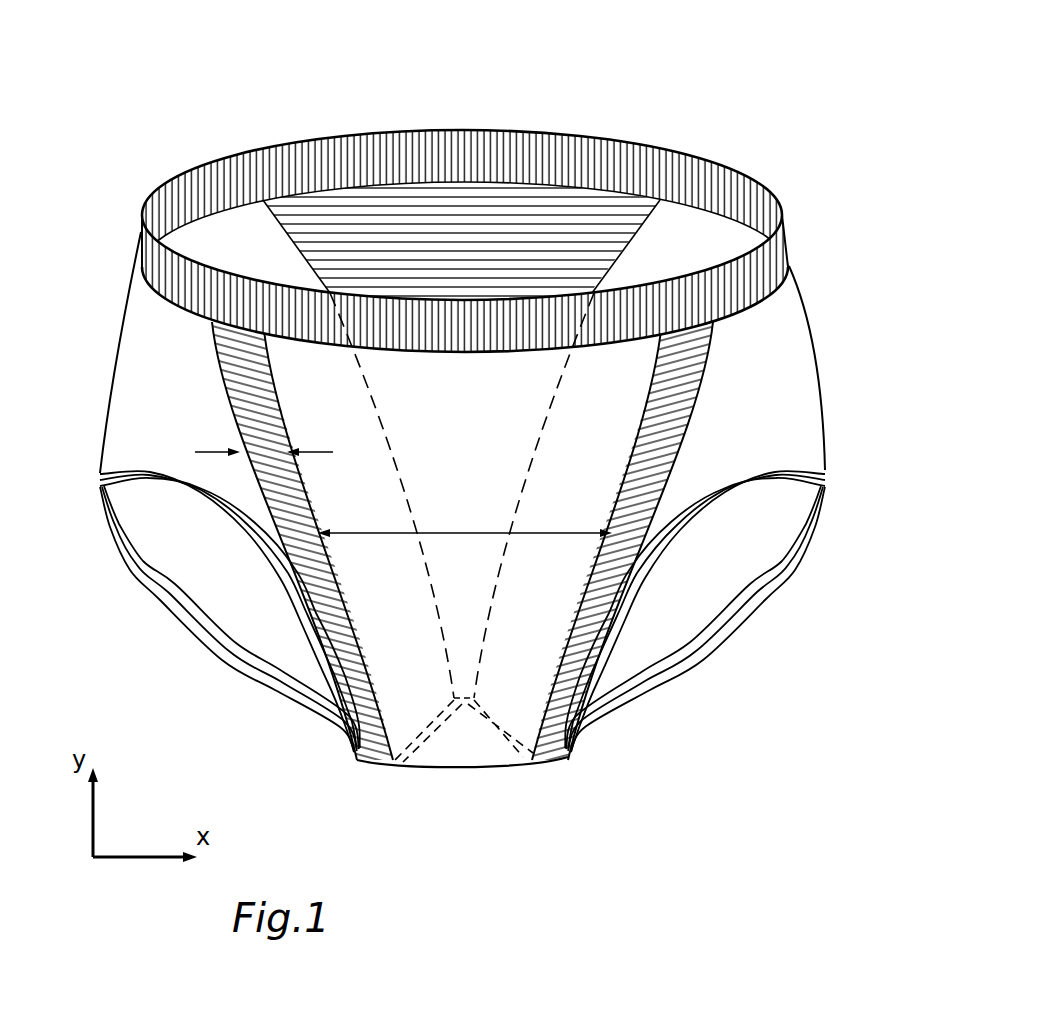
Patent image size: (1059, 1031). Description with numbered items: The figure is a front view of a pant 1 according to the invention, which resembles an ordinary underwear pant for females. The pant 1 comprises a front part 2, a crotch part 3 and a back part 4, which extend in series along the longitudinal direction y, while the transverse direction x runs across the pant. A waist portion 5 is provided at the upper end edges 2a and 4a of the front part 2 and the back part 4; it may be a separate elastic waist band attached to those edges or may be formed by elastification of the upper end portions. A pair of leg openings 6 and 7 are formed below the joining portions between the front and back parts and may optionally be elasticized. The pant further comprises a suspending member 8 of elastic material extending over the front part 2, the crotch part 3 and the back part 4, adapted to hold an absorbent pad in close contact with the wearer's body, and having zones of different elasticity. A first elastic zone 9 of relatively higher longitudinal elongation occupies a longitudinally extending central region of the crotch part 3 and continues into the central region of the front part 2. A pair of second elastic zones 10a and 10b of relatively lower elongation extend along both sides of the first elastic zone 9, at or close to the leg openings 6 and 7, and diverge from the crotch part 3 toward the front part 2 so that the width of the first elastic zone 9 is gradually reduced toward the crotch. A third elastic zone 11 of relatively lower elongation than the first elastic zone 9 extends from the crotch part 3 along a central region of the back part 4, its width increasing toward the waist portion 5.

The pant 1 is at (679, 64).
The front part 2 is at (145, 380).
The upper end edge of the front part 2a is at (150, 296).
The crotch part 3 is at (512, 772).
The back part 4 is at (465, 231).
The upper end edge of the back part 4a is at (256, 206).
The waist portion 5 is at (693, 168).
The leg opening 6 is at (193, 563).
The leg opening 7 is at (722, 563).
The suspending member 8 is at (688, 457).
The first elastic zone 9 is at (425, 711).
The second elastic zone 10a is at (333, 603).
The second elastic zone 10b is at (593, 630).
The third elastic zone 11 is at (593, 243).